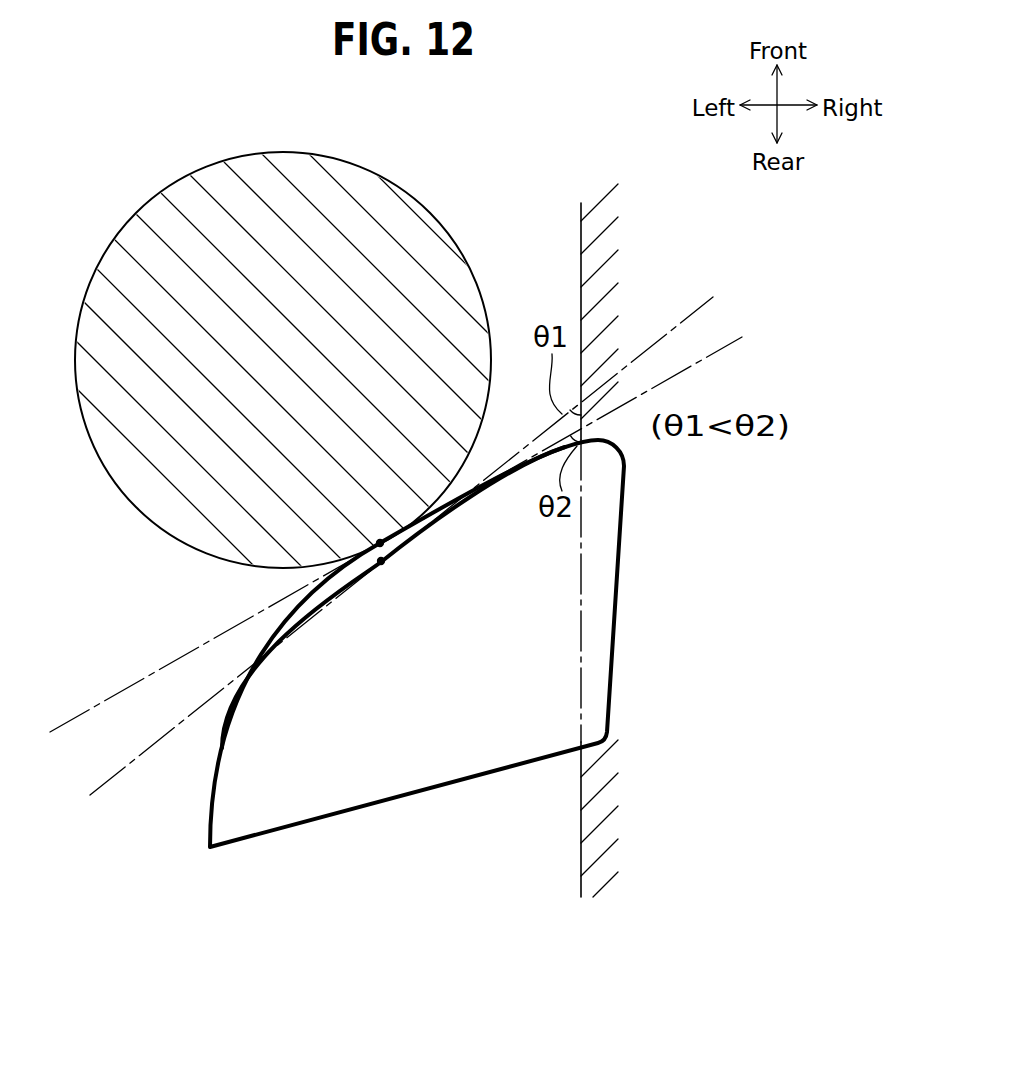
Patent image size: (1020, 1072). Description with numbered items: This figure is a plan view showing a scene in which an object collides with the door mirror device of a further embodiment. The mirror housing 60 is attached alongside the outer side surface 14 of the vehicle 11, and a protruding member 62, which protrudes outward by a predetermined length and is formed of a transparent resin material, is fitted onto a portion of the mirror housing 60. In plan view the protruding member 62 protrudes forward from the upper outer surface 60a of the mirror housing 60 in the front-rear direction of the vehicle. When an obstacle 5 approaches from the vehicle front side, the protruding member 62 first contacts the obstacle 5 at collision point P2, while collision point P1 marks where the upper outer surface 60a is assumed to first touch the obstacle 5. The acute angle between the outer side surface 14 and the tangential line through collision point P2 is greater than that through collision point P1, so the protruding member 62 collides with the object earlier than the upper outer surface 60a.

The obstacle 5 is at (283, 152).
The vehicle 11 is at (556, 254).
The outer side surface 14 is at (582, 866).
The mirror housing 60 is at (635, 622).
The upper outer surface 60a is at (280, 657).
The protruding member 62 is at (270, 627).
The collision point P1 is at (382, 564).
The collision point P2 is at (380, 541).